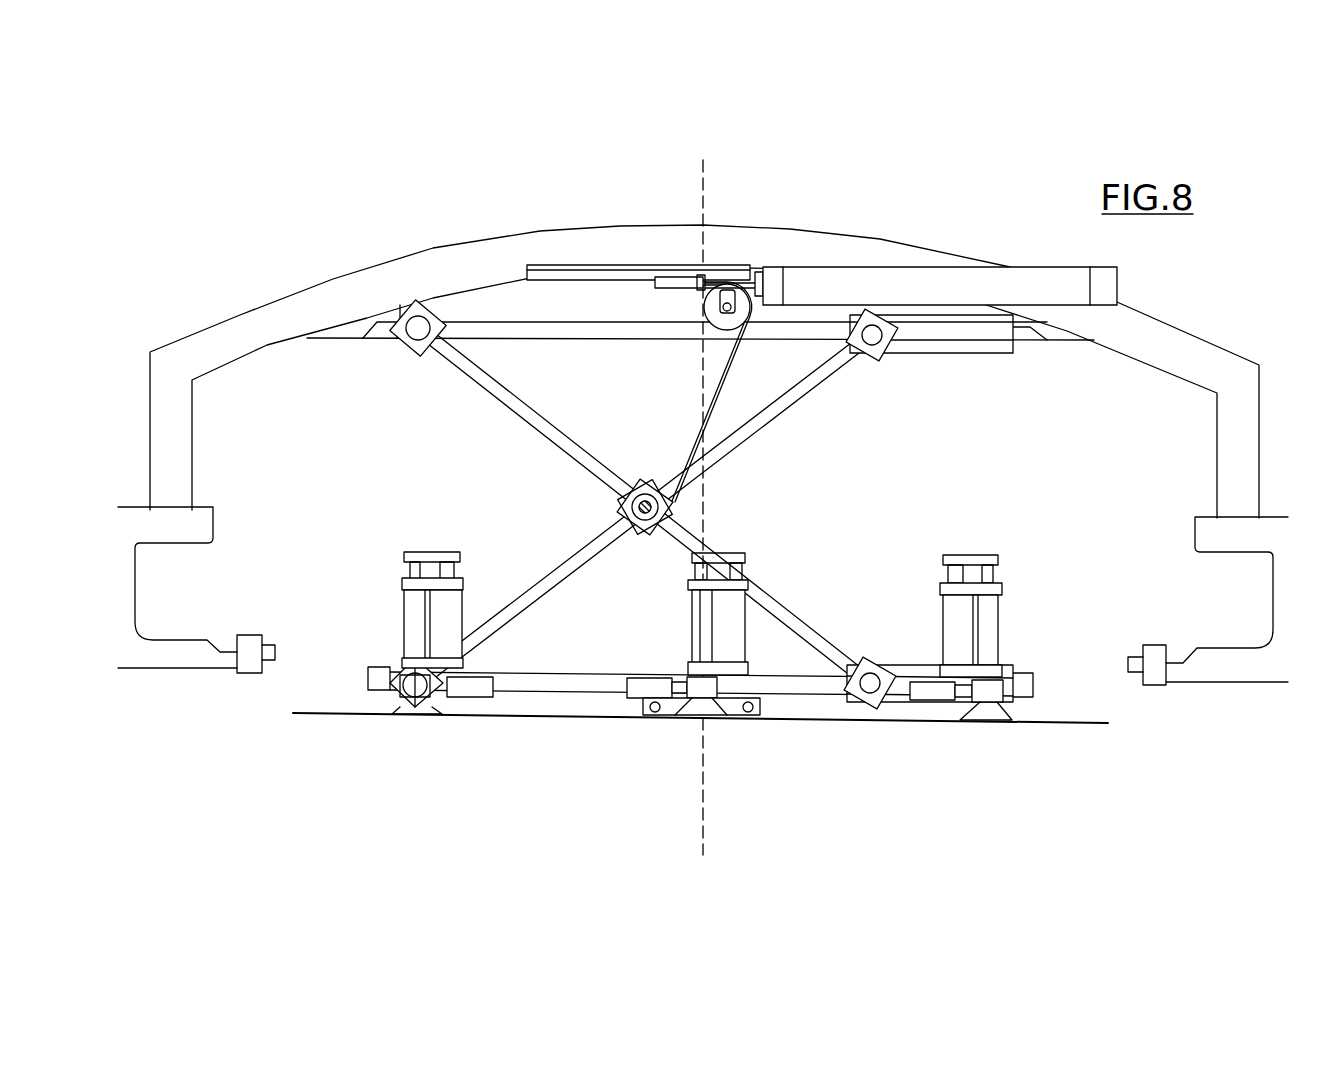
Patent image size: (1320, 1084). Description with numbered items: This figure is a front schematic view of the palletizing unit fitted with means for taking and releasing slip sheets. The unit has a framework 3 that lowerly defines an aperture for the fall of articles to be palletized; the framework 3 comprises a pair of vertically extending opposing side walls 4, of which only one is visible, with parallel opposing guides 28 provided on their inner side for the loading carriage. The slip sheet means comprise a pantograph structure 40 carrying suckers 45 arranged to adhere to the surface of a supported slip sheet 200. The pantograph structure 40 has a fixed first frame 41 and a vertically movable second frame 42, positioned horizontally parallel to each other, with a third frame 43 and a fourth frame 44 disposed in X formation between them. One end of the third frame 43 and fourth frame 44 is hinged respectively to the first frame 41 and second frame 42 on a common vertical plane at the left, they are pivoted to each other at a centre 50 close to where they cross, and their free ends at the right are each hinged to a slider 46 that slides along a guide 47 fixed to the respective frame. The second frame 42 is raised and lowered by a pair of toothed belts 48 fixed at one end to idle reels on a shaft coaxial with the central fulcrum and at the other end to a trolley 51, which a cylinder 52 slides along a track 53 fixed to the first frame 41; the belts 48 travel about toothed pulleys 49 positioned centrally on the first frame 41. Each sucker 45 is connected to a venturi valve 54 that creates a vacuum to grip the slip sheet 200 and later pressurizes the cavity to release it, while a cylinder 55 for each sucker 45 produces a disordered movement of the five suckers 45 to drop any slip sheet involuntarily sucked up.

The framework 3 is at (1185, 352).
The side walls 4 is at (1281, 627).
The guides 28 is at (133, 590).
The pantograph structure 40 is at (999, 457).
The fixed first frame 41 is at (381, 327).
The vertically movable second frame 42 is at (540, 681).
The third frame 43 is at (490, 395).
The fourth frame 44 is at (745, 442).
The suckers 45 is at (425, 715).
The slider 46 is at (888, 360).
The guide 47 is at (990, 354).
The toothed belts 48 is at (705, 403).
The toothed pulleys 49 is at (732, 324).
The pivot centre 50 is at (617, 488).
The trolley 51 is at (683, 278).
The cylinder 52 is at (965, 273).
The track 53 is at (625, 268).
The venturi valve 54 is at (465, 698).
The cylinder 55 is at (435, 615).
The slip sheet 200 is at (1088, 724).